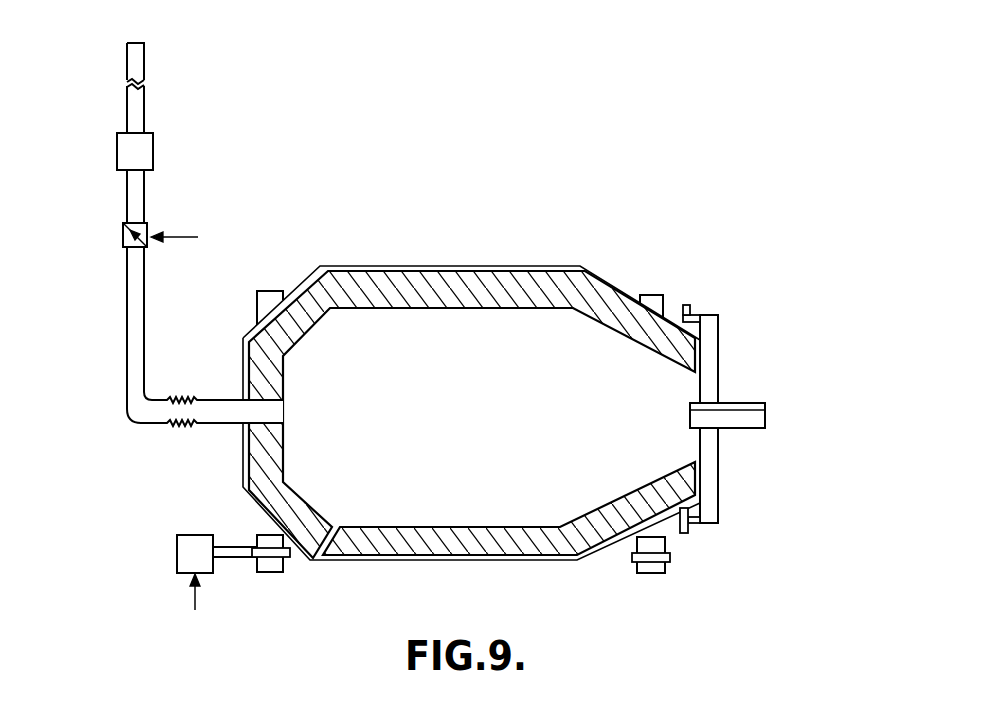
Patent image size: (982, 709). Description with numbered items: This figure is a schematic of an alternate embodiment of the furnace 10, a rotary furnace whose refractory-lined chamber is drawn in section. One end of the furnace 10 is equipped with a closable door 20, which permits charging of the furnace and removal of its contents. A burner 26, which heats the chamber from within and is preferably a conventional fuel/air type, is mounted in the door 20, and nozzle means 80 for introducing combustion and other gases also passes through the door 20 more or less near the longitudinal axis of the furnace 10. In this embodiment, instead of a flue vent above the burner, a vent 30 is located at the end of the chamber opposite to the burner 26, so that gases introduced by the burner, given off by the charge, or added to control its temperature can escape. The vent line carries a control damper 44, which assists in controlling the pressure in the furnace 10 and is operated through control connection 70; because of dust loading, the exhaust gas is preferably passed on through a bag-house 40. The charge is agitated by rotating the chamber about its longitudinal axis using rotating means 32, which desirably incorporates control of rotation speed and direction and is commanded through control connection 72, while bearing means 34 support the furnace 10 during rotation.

The furnace 10 is at (539, 245).
The closable door 20 is at (740, 493).
The burner 26 is at (752, 420).
The vent 30 is at (219, 402).
The rotating means 32 is at (188, 535).
The bearing means 34 is at (283, 570).
The bag-house 40 is at (153, 152).
The control damper 44 is at (123, 243).
The control connection 70 is at (178, 237).
The control connection 72 is at (195, 600).
The nozzle means 80 is at (745, 403).